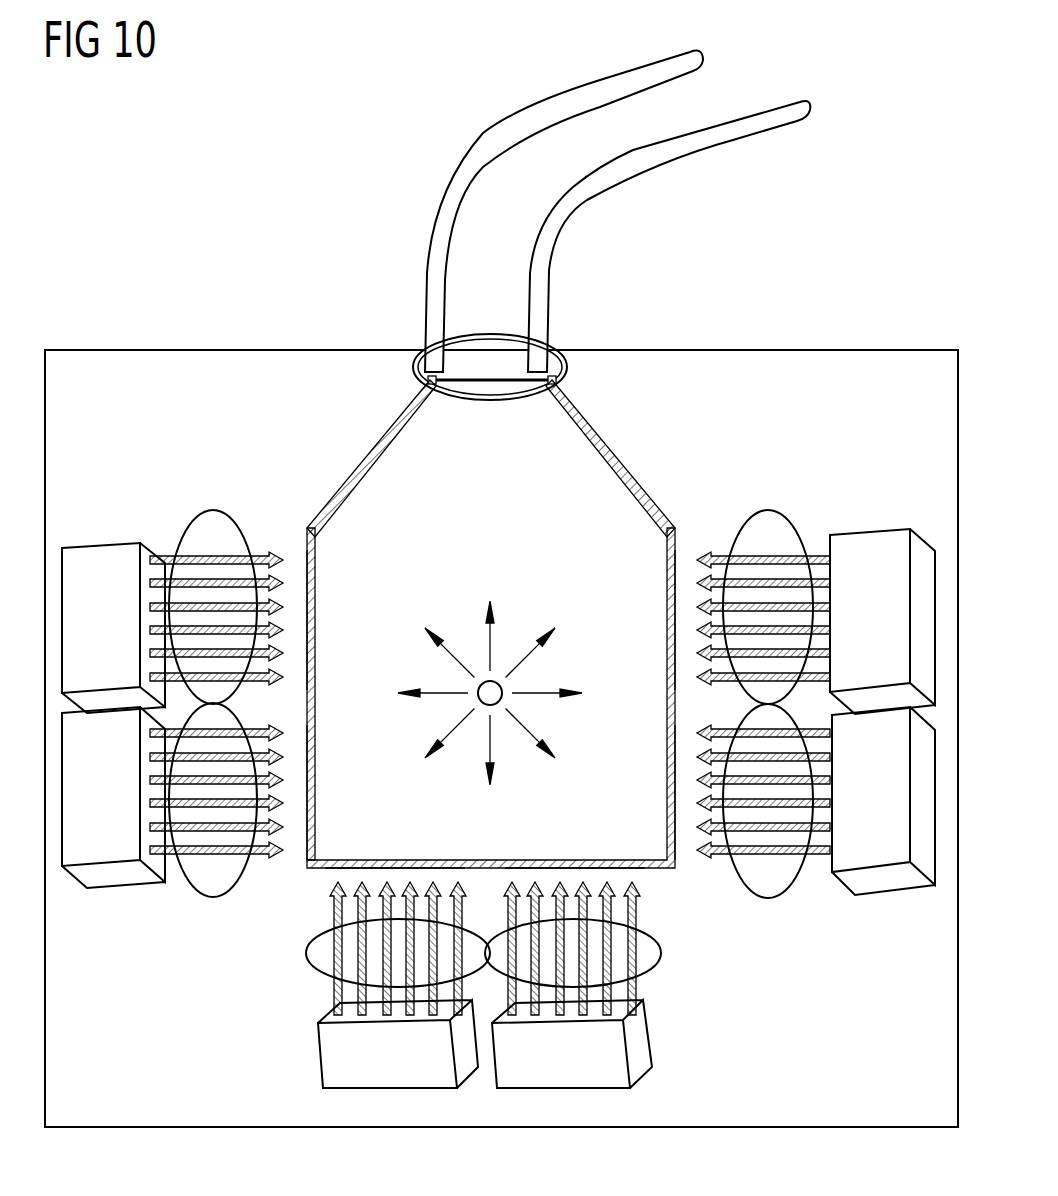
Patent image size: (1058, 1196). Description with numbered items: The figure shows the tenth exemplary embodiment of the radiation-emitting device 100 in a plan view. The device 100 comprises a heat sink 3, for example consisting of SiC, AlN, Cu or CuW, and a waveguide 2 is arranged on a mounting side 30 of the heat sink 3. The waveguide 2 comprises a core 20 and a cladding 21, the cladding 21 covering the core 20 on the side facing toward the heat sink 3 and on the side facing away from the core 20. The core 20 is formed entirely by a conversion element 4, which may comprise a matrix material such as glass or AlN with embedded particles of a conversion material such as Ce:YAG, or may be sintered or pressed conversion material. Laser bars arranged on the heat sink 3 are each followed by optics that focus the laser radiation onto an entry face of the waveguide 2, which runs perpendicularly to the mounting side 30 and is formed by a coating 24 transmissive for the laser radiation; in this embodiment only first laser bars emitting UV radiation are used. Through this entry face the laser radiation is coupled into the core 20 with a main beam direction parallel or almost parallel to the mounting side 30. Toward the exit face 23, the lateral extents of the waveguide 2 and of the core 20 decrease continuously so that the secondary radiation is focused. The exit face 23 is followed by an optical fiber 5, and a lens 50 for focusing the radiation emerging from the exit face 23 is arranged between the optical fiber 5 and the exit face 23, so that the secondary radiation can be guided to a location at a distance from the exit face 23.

The radiation-emitting device 100 is at (872, 328).
The heat sink 3 is at (762, 1122).
The mounting side 30 is at (905, 1110).
The optical fiber 5 is at (568, 118).
The lens 50 is at (490, 403).
The exit face 23 is at (522, 378).
The waveguide 2 is at (310, 872).
The core 20 is at (622, 498).
The conversion element 4 is at (664, 478).
The cladding 21 is at (612, 447).
The coating 24 is at (665, 827).